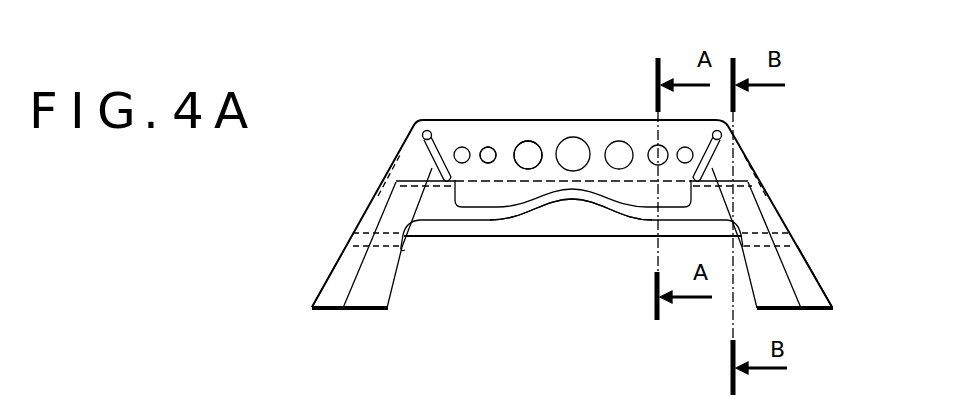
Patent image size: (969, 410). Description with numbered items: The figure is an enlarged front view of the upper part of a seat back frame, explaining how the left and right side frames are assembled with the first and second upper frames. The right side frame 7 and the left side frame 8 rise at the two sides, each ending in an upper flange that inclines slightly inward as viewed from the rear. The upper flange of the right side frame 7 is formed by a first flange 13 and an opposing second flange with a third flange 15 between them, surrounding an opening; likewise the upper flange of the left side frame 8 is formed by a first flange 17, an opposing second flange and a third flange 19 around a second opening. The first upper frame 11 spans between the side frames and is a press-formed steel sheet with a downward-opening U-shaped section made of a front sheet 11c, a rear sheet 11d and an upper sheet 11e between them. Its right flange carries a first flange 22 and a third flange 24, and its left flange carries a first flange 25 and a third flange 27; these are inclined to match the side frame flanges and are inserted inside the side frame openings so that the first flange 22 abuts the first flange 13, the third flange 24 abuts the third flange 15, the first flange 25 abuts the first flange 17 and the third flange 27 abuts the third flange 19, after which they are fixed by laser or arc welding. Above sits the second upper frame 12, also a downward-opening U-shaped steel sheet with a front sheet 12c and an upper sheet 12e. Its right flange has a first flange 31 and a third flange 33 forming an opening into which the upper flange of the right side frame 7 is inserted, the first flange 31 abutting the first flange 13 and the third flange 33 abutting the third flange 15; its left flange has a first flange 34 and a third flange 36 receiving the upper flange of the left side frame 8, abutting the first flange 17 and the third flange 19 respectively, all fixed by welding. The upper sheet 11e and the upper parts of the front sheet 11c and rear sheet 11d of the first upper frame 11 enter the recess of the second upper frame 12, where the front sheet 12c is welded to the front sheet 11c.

The right side frame 7 is at (328, 280).
The left side frame 8 is at (825, 288).
The first upper frame 11 is at (568, 222).
The front sheet 11c is at (468, 221).
The rear sheet 11d is at (515, 236).
The upper sheet 11e is at (641, 180).
The second upper frame 12 is at (598, 121).
The front sheet 12c is at (487, 131).
The upper sheet 12e is at (537, 121).
The first flange 13 is at (382, 219).
The third flange 15 is at (369, 204).
The first flange 17 is at (772, 220).
The third flange 19 is at (777, 210).
The first flange 22 is at (445, 236).
The third flange 24 is at (383, 186).
The first flange 25 is at (797, 240).
The third flange 27 is at (777, 192).
The first flange 31 is at (418, 150).
The third flange 33 is at (420, 155).
The first flange 34 is at (735, 168).
The third flange 36 is at (728, 134).